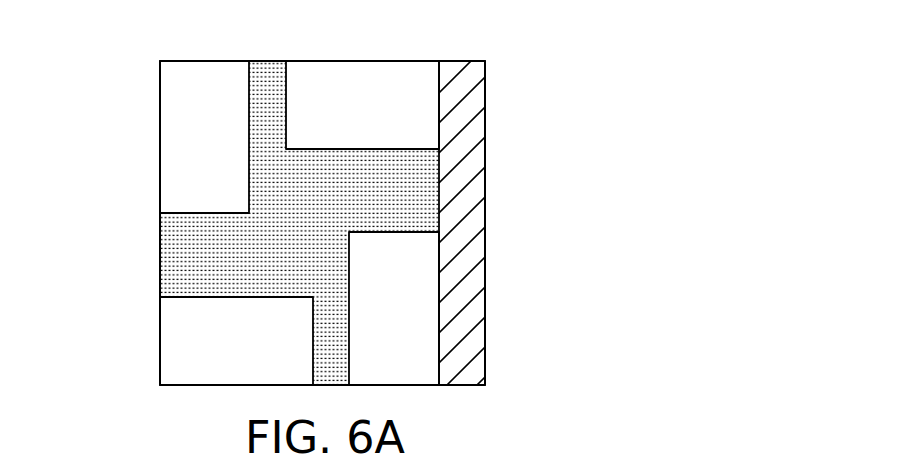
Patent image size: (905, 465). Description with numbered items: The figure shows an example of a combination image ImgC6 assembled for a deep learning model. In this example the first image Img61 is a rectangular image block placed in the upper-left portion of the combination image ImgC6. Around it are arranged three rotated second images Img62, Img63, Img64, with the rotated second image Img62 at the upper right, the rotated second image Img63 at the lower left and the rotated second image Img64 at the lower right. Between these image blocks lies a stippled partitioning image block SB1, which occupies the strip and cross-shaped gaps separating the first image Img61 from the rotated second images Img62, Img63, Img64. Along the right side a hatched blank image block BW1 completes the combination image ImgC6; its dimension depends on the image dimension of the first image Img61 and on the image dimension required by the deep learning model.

The combination image ImgC6 is at (423, 62).
The partitioning image block SB1 is at (265, 66).
The first image Img61 is at (168, 118).
The rotated second image Img62 is at (360, 68).
The rotated second image Img63 is at (167, 309).
The rotated second image Img64 is at (405, 376).
The blank image block BW1 is at (478, 163).